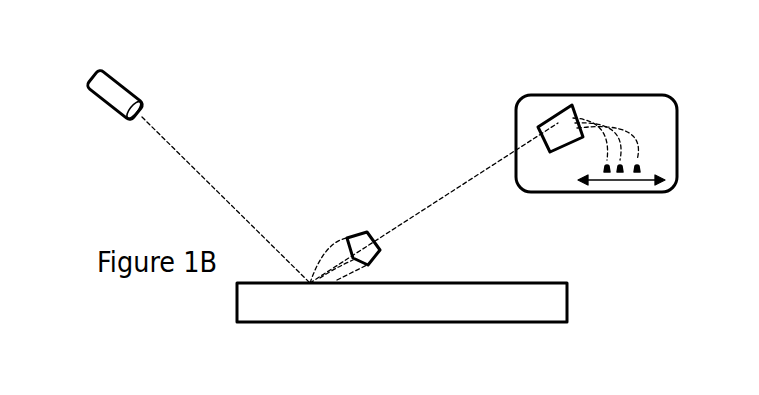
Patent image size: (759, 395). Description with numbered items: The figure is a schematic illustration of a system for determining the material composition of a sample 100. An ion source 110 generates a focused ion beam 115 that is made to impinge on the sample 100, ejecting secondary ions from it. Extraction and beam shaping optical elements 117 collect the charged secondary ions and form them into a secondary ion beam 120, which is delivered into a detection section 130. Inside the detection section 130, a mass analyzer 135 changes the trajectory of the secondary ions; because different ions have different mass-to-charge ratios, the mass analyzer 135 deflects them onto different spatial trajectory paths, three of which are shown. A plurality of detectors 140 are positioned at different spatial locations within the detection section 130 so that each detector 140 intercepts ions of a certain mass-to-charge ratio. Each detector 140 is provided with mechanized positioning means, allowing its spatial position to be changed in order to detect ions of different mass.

The sample 100 is at (417, 313).
The ion source 110 is at (104, 82).
The focused ion beam 115 is at (207, 158).
The extraction and beam shaping optical elements 117 is at (363, 233).
The secondary ion beam 120 is at (468, 178).
The detection section 130 is at (527, 97).
The mass analyzer 135 is at (562, 105).
The detectors 140 is at (620, 172).